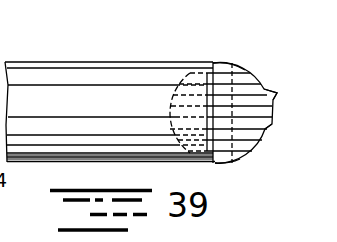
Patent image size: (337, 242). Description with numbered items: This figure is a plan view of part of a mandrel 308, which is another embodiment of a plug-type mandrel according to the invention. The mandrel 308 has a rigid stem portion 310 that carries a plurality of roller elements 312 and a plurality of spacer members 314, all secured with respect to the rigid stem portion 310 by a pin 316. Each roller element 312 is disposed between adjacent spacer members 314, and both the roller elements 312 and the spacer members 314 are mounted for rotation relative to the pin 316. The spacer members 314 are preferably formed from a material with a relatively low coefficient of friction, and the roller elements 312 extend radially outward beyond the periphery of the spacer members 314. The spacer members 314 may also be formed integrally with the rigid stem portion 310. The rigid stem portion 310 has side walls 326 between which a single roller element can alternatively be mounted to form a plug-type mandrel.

The mandrel 308 is at (232, 55).
The rigid stem portion 310 is at (96, 62).
The roller elements 312 is at (268, 96).
The spacer members 314 is at (255, 81).
The pin 316 is at (203, 61).
The side walls 326 is at (236, 66).